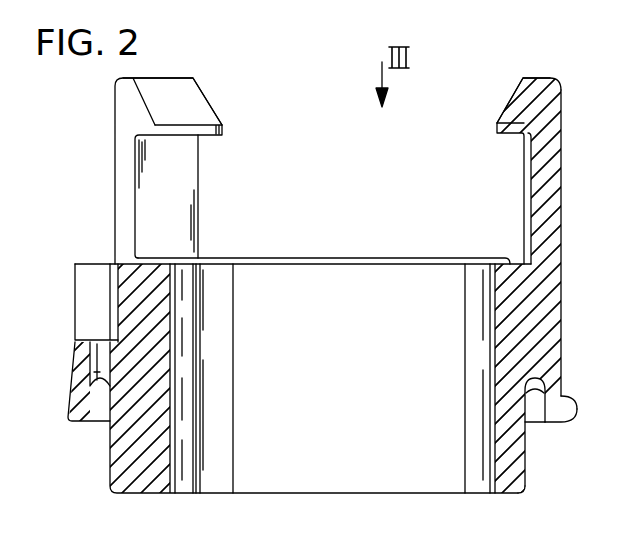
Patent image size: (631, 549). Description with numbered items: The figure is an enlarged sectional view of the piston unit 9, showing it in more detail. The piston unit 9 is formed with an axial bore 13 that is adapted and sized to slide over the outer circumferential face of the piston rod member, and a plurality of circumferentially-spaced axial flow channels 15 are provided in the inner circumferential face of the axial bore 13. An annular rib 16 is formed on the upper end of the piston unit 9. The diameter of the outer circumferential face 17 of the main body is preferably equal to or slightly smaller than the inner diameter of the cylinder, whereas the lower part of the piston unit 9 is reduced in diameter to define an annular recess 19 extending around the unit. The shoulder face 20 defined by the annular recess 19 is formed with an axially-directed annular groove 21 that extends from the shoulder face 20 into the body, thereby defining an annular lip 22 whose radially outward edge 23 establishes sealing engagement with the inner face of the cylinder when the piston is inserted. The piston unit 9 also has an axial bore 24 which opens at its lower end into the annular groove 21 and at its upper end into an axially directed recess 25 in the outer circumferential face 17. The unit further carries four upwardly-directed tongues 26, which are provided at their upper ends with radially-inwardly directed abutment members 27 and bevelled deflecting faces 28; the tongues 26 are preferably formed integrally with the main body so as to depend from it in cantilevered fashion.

The piston unit 9 is at (133, 449).
The axial bore 13 is at (350, 473).
The axial flow channels 15 is at (215, 472).
The annular rib 16 is at (502, 258).
The outer circumferential face 17 is at (562, 320).
The annular recess 19 is at (537, 437).
The shoulder face 20 is at (553, 427).
The annular groove 21 is at (543, 388).
The annular lip 22 is at (560, 403).
The radially outward edge 23 is at (555, 416).
The axial bore 24 is at (100, 370).
The axially directed recess 25 is at (98, 292).
The tongues 26 is at (122, 193).
The abutment members 27 is at (182, 137).
The bevelled deflecting faces 28 is at (180, 97).